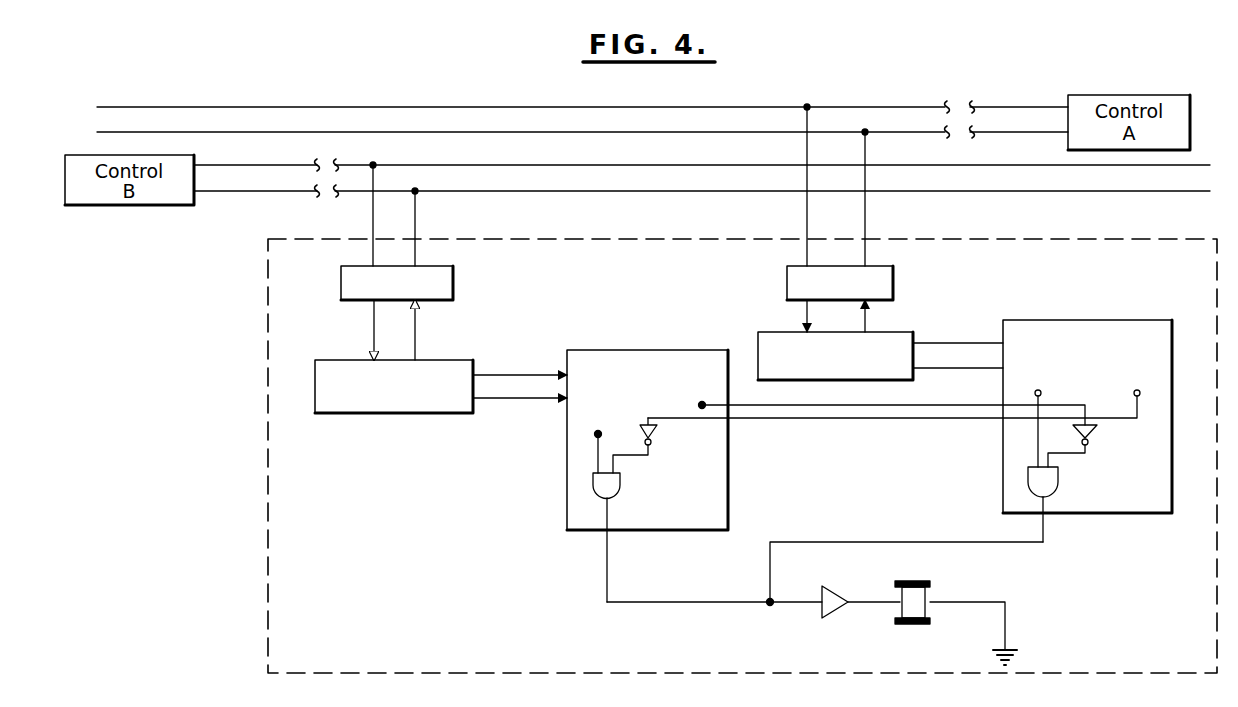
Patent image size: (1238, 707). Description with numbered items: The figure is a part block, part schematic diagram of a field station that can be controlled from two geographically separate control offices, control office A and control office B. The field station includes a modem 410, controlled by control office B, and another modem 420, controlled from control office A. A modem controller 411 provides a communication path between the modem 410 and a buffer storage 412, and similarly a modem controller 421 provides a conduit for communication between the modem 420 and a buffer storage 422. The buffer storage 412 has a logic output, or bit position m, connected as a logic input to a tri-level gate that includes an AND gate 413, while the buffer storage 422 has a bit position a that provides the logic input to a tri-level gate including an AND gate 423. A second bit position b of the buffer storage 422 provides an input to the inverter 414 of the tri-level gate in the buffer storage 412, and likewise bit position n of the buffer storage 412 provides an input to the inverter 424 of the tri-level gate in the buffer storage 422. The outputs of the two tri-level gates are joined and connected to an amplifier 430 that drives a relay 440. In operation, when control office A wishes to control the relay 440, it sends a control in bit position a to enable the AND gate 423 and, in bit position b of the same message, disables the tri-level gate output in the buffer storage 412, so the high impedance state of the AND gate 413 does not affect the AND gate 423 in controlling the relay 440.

The modem 410 is at (448, 283).
The modem controller 411 is at (453, 367).
The buffer storage 412 is at (679, 350).
The AND gate 413 is at (612, 484).
The inverter 414 is at (655, 433).
The modem 420 is at (886, 283).
The modem controller 421 is at (887, 340).
The buffer storage 422 is at (1163, 320).
The AND gate 423 is at (1050, 478).
The inverter 424 is at (1095, 432).
The amplifier 430 is at (845, 592).
The relay 440 is at (918, 597).